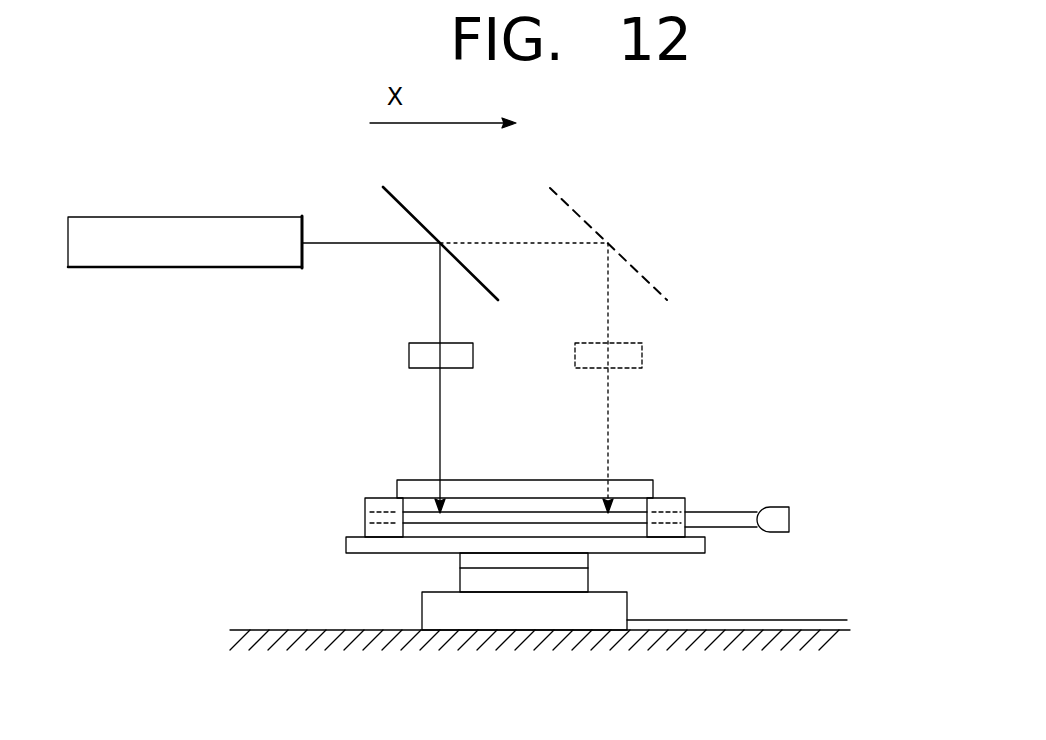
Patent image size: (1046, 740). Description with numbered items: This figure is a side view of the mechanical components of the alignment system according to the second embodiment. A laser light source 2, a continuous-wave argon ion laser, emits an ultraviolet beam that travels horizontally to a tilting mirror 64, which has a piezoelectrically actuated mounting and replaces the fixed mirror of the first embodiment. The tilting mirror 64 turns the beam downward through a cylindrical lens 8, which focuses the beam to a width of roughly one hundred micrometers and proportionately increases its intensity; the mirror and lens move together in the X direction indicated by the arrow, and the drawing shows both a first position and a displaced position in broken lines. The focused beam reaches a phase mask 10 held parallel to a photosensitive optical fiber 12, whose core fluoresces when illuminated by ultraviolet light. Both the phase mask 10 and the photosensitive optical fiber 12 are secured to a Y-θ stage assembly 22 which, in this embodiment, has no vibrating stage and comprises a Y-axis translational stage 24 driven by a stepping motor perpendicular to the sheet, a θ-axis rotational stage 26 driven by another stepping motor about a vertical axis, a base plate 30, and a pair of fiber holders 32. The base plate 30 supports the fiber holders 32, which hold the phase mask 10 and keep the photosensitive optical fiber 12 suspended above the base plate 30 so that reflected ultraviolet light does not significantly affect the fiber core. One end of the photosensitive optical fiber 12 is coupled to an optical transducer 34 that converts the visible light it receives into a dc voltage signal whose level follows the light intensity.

The laser light source 2 is at (197, 217).
The tilting mirror 64 is at (396, 199).
The cylindrical lens 8 is at (409, 355).
The phase mask 10 is at (410, 485).
The photosensitive optical fiber 12 is at (622, 516).
The Y-θ stage assembly 22 is at (247, 478).
The Y-axis translational stage 24 is at (422, 612).
The θ-axis rotational stage 26 is at (460, 578).
The base plate 30 is at (346, 548).
The fiber holders 32 is at (365, 517).
The optical transducer 34 is at (777, 507).